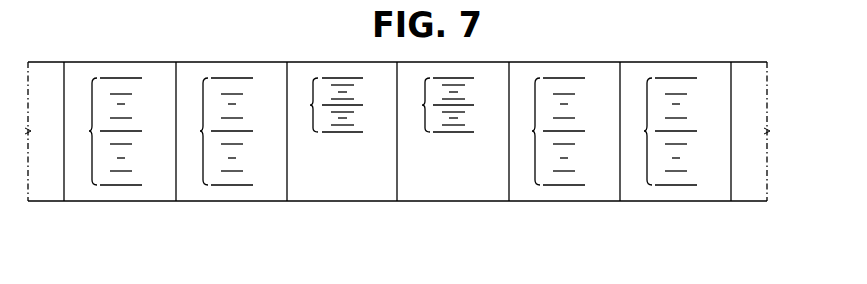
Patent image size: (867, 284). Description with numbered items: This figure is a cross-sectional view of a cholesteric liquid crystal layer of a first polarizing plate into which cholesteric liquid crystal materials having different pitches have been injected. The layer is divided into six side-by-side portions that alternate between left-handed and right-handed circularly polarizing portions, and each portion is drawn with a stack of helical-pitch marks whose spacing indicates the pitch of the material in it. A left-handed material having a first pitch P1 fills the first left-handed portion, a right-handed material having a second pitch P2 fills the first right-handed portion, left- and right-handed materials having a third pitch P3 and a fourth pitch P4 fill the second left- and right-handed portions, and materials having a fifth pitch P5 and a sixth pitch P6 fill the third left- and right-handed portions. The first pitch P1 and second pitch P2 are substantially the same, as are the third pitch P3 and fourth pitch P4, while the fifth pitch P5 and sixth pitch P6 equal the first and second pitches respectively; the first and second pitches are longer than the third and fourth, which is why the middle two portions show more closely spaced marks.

The first pitch P1 is at (106, 131).
The second pitch P2 is at (217, 131).
The third pitch P3 is at (327, 105).
The fourth pitch P4 is at (439, 105).
The fifth pitch P5 is at (549, 131).
The sixth pitch P6 is at (661, 131).